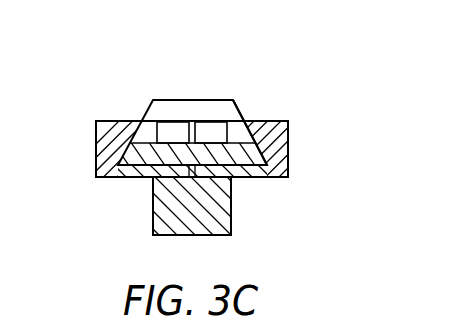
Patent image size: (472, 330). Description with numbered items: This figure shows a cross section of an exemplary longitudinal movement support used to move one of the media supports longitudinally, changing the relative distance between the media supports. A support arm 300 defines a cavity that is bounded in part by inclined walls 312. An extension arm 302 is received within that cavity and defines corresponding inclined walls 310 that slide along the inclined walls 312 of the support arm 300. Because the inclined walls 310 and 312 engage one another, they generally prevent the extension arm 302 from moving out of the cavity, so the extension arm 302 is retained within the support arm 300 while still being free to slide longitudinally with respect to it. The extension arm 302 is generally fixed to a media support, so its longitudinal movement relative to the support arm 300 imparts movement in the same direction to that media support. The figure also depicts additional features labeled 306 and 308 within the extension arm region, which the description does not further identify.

The support arm 300 is at (273, 178).
The extension arm 302 is at (200, 99).
The LED die 306 is at (172, 129).
The substrate layer 308 is at (173, 106).
The inclined walls 310 is at (271, 149).
The inclined walls 312 is at (246, 127).